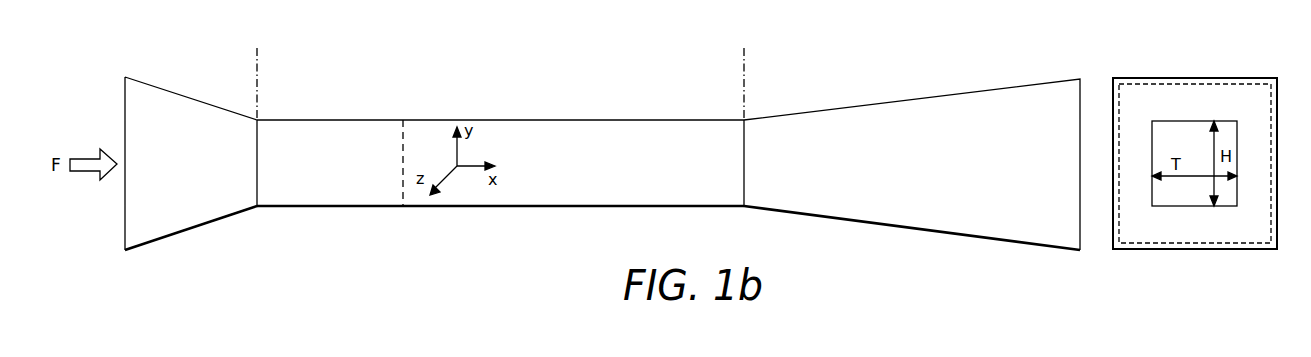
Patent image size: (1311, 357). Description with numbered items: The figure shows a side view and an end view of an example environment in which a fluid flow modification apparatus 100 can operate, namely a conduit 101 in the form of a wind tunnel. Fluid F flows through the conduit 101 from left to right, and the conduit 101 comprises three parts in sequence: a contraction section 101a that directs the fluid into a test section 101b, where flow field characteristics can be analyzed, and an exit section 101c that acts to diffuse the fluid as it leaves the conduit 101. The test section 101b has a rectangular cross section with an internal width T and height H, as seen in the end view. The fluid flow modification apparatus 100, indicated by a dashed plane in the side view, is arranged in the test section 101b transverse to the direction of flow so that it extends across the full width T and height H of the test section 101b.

The fluid flow modification apparatus 100 is at (396, 209).
The conduit 101 is at (602, 129).
The contraction section 101a is at (257, 70).
The test section 101b is at (744, 111).
The exit section 101c is at (1080, 70).